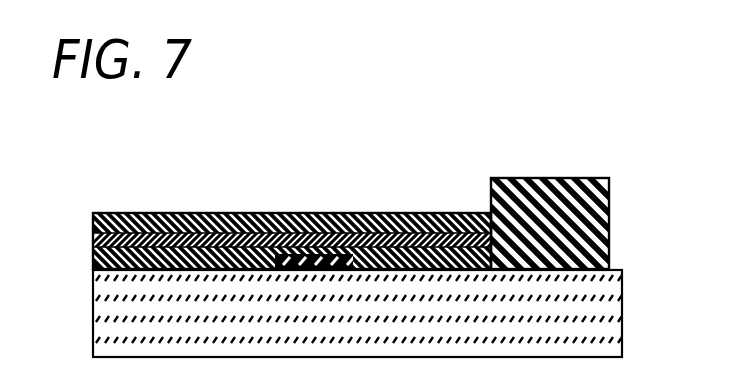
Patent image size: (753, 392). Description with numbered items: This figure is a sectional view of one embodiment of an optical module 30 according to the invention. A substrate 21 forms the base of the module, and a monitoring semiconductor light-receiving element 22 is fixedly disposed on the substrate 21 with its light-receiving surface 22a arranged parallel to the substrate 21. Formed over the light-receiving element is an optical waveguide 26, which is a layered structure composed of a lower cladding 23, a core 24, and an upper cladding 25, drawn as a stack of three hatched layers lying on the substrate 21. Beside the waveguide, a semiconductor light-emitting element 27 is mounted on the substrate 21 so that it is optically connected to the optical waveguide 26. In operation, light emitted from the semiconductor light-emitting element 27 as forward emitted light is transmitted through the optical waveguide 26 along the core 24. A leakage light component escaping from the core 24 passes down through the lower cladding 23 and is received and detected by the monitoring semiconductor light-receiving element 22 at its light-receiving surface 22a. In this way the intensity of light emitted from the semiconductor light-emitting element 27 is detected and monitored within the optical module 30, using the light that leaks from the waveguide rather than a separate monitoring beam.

The substrate 21 is at (577, 330).
The monitoring semiconductor light-receiving element 22 is at (333, 220).
The light-receiving surface 22a is at (352, 238).
The lower cladding 23 is at (161, 213).
The core 24 is at (213, 213).
The upper cladding 25 is at (292, 213).
The optical waveguide 26 is at (266, 205).
The semiconductor light-emitting element 27 is at (545, 207).
The optical module 30 is at (567, 106).